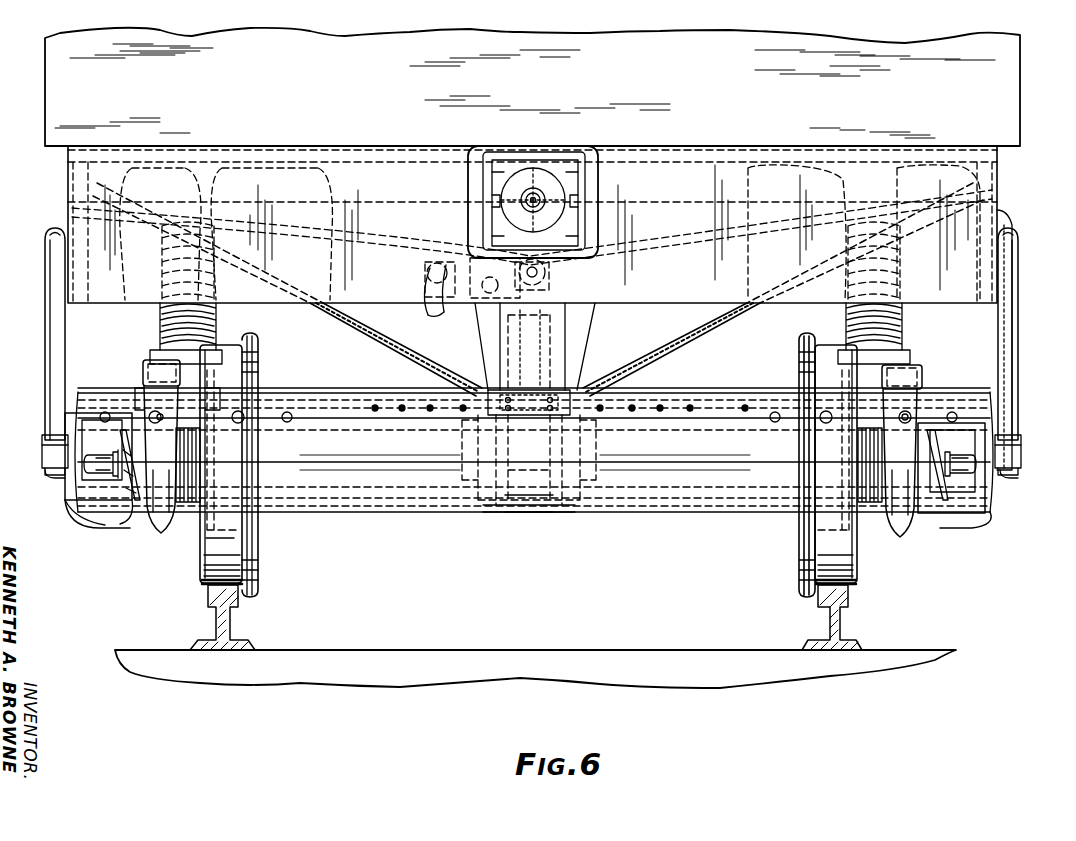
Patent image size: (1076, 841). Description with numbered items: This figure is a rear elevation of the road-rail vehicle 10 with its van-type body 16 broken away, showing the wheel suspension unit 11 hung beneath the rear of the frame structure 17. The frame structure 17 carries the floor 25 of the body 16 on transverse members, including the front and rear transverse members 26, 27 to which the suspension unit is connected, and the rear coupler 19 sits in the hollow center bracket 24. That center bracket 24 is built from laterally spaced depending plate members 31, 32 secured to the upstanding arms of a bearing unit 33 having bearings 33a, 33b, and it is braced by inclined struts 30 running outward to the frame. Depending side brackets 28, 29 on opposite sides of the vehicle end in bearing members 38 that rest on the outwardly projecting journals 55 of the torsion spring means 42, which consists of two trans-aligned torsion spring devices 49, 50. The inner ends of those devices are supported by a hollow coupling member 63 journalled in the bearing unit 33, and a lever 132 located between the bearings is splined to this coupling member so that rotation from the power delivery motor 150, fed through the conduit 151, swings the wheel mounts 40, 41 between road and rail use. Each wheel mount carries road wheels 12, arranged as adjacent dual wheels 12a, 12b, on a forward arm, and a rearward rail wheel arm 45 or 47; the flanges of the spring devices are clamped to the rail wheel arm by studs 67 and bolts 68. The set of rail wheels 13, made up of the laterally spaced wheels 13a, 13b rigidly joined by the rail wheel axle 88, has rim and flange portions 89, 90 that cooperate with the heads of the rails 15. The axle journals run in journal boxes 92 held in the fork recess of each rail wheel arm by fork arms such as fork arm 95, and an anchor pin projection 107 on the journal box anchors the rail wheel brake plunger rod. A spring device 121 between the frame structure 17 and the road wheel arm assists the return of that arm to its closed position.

The van-type body 16 is at (1024, 104).
The road-rail vehicle 10 is at (1002, 172).
The wheel suspension unit 11 is at (1020, 364).
The road wheels 12 is at (70, 526).
The dual road wheel 12a is at (152, 170).
The dual road wheel 12b is at (288, 170).
The rail wheels 13 is at (203, 536).
The rail wheel 13a is at (208, 556).
The rail wheel 13b is at (848, 553).
The rails 15 is at (214, 596).
The frame structure 17 is at (1013, 276).
The rear coupler 19 is at (560, 176).
The center bracket 24 is at (500, 340).
The floor 25 is at (745, 158).
The front transverse member 26 is at (662, 236).
The rear transverse member 27 is at (637, 300).
The side bracket 28 is at (46, 348).
The side bracket 29 is at (1012, 322).
The inclined struts 30 is at (695, 336).
The plate member 31 is at (502, 356).
The plate member 32 is at (566, 358).
The bearing unit 33 is at (562, 522).
The bearing 33a is at (478, 455).
The bearing 33b is at (582, 452).
The bearing member 38 is at (48, 442).
The wheel mount 40 is at (152, 378).
The wheel mount 41 is at (918, 365).
The torsion spring means 42 is at (394, 516).
The rail wheel arm 45 is at (158, 415).
The rail wheel arm 47 is at (905, 448).
The torsion spring device 49 is at (333, 516).
The torsion spring device 50 is at (642, 516).
The journals 55 is at (44, 458).
The coupling member 63 is at (505, 505).
The studs 67 is at (240, 410).
The bolts 68 is at (284, 420).
The rail wheel axle 88 is at (530, 515).
The rim portion 89 is at (202, 583).
The flange portion 90 is at (260, 590).
The journal box 92 is at (122, 480).
The fork arm 95 is at (165, 462).
The anchor pin projection 107 is at (100, 465).
The spring device 121 is at (218, 330).
The lever 132 is at (560, 350).
The power delivery motor 150 is at (436, 254).
The conduit 151 is at (428, 320).